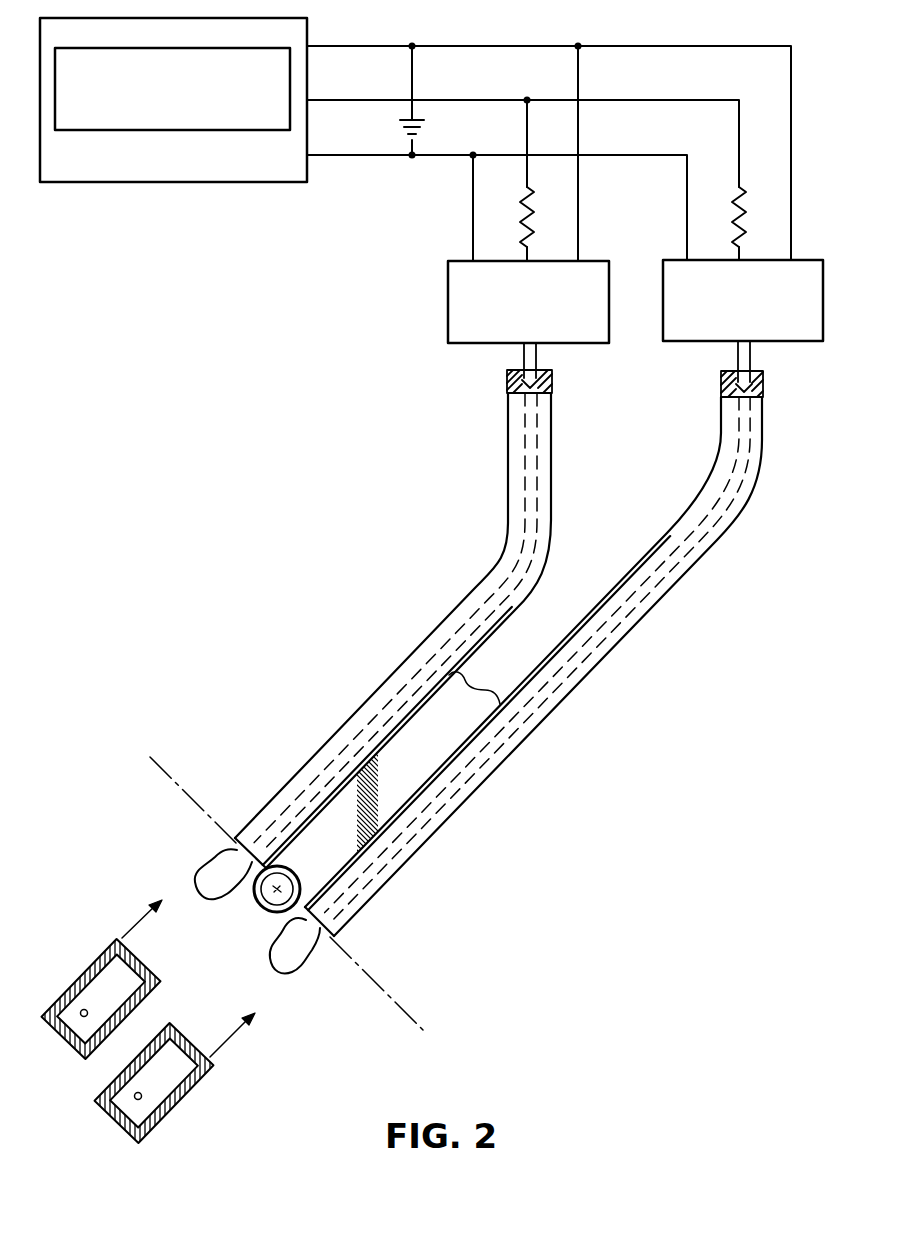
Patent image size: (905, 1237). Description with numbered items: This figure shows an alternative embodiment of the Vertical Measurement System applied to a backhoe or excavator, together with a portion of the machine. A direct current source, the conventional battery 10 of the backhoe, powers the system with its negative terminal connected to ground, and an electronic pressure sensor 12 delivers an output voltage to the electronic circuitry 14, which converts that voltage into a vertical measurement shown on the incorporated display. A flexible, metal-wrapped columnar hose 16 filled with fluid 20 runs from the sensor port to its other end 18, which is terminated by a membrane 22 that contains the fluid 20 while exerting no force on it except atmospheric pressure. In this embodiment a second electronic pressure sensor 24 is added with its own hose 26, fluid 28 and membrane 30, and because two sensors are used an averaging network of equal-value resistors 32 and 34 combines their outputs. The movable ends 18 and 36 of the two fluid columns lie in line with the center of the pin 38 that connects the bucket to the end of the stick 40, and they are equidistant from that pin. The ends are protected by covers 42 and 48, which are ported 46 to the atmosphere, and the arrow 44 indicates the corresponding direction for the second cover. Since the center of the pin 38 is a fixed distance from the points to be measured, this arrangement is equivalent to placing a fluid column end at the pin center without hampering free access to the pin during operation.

The battery 10 is at (441, 136).
The electronic pressure sensor 12 is at (447, 305).
The electronic circuitry 14 is at (215, 184).
The columnar hose 16 is at (411, 630).
The other end of hose 18 is at (235, 838).
The fluid 20 is at (548, 539).
The membrane 22 is at (196, 878).
The second electronic pressure sensor 24 is at (783, 344).
The hose 26 is at (533, 669).
The fluid 28 is at (624, 622).
The membrane 30 is at (269, 962).
The resistor 32 is at (742, 231).
The resistor 34 is at (553, 221).
The movable end of fluid column 36 is at (333, 937).
The pin 38 is at (277, 889).
The stick 40 is at (428, 774).
The cover 42 is at (89, 987).
The second container 44 is at (192, 1085).
The port 46 is at (80, 1013).
The cover 48 is at (141, 1098).